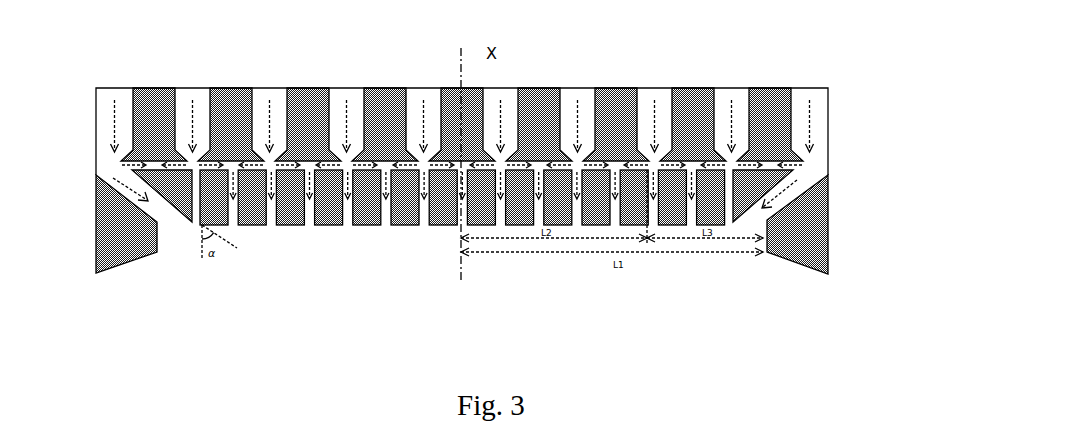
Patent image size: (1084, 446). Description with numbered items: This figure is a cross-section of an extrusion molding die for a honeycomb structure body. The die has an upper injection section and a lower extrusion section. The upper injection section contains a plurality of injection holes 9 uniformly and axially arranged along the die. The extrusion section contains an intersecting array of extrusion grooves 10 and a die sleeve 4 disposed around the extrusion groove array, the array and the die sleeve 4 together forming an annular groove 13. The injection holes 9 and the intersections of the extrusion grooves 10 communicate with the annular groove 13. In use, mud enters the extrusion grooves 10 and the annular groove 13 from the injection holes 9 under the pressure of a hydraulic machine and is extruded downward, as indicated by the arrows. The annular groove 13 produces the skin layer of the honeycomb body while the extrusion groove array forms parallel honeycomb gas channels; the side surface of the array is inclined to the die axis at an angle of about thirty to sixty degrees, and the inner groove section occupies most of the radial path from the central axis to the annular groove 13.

The die sleeve 4 is at (117, 243).
The injection holes 9 is at (732, 100).
The extrusion grooves 10 is at (273, 221).
The annular groove 13 is at (767, 205).